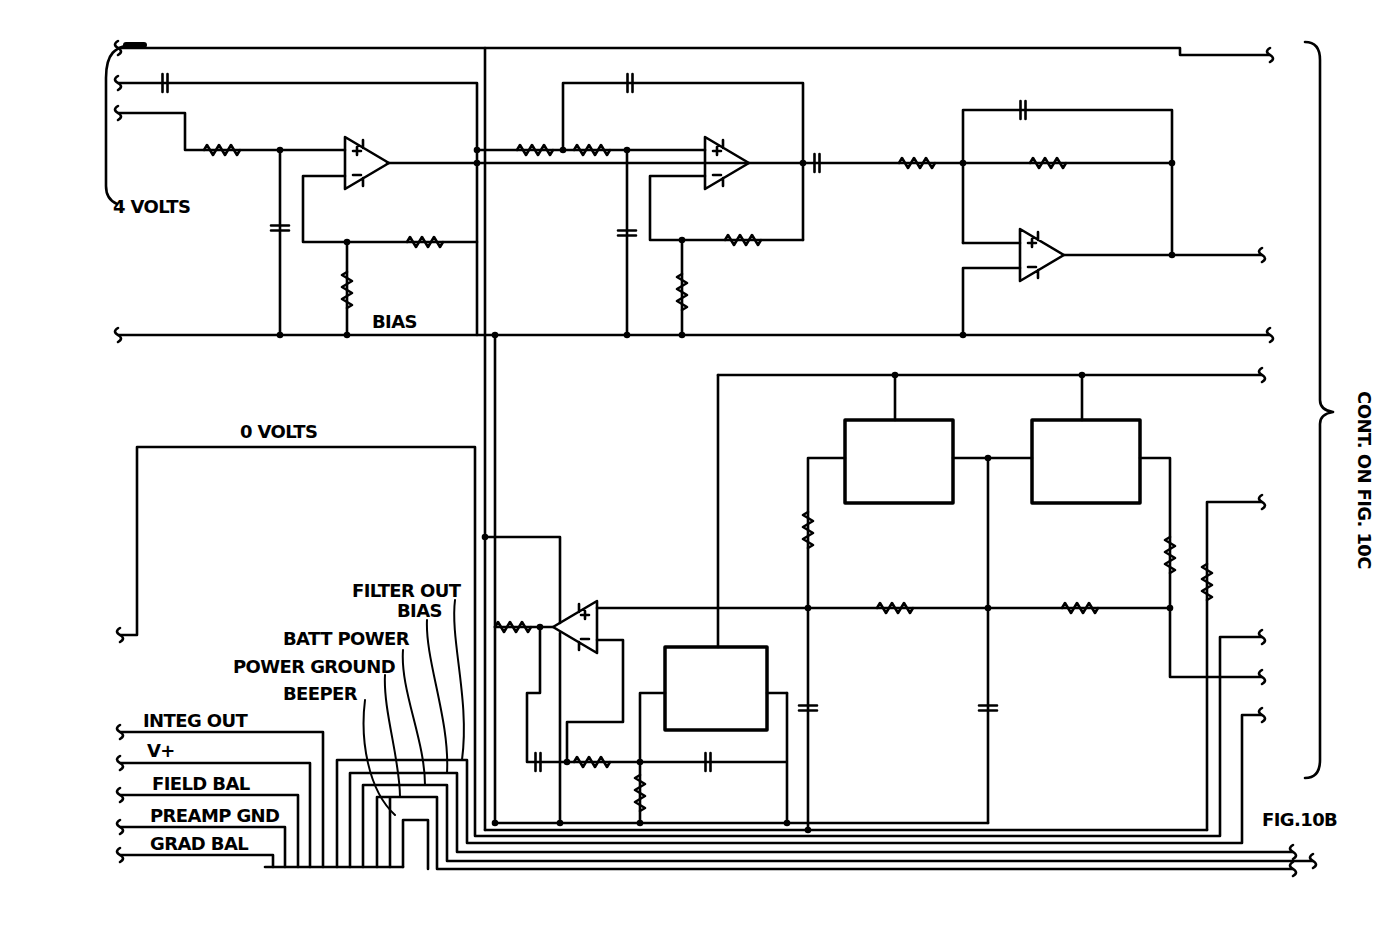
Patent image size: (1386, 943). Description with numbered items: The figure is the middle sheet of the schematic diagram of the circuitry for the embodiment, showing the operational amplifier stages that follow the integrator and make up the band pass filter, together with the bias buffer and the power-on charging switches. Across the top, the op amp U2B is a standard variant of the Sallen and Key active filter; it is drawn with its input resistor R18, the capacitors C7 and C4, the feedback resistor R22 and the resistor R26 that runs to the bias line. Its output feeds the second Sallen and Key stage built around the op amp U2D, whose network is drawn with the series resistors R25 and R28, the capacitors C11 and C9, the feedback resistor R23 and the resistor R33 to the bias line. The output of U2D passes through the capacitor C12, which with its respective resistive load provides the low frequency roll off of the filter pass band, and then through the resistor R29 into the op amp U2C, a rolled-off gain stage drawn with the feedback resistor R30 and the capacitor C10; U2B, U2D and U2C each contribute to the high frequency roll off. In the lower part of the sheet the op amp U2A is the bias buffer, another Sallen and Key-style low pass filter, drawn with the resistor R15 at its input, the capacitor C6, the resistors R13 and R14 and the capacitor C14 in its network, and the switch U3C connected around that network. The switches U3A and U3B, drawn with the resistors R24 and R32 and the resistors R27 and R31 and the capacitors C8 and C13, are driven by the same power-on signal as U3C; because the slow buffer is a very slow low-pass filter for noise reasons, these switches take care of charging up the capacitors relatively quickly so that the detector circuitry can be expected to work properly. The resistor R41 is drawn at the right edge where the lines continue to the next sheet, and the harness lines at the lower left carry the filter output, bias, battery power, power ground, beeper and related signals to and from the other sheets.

The capacitor C7 .01uF C7 is at (183, 76).
The resistor R18 1.2M R18 is at (228, 156).
The Sallen and Key active filter stage U2B is at (391, 147).
The capacitor C4 .01uF C4 is at (253, 242).
The resistor R22 39K R22 is at (390, 211).
The resistor R26 100K R26 is at (400, 288).
The resistor R25 1.2M R25 is at (538, 156).
The resistor R28 1.2M R28 is at (598, 156).
The capacitor C11 .01uF C11 is at (683, 150).
The Sallen and Key active filter stage U2D is at (739, 143).
The capacitor C9 .01uF C9 is at (599, 242).
The resistor R23 130K R23 is at (726, 226).
The resistor R33 100K R33 is at (734, 287).
The capacitor C12 is at (837, 142).
The resistor R29 390K R29 is at (883, 169).
The capacitor C10 2200pF C10 is at (1067, 171).
The resistor R30 2M R30 is at (1067, 151).
The rolled-off gain stage U2C is at (1114, 263).
The analog switch U3A is at (931, 425).
The analog switch U3B is at (1085, 425).
The resistor R24 1K R24 is at (849, 533).
The resistor R32 1K R32 is at (1191, 571).
The resistor R27 1M R27 is at (883, 597).
The resistor R31 1M R31 is at (1084, 597).
The resistor R41 1K R41 is at (1235, 662).
The capacitor C8 1uF C8 is at (830, 719).
The capacitor C13 1uF C13 is at (1010, 640).
The bias buffer U2A is at (575, 668).
The resistor R15 220 R15 is at (524, 654).
The capacitor C6 220pF C6 is at (532, 725).
The resistor R13 10K R13 is at (603, 770).
The resistor R14 2M R14 is at (681, 792).
The capacitor C14 1uF C14 is at (713, 758).
The analog switch U3C is at (710, 568).